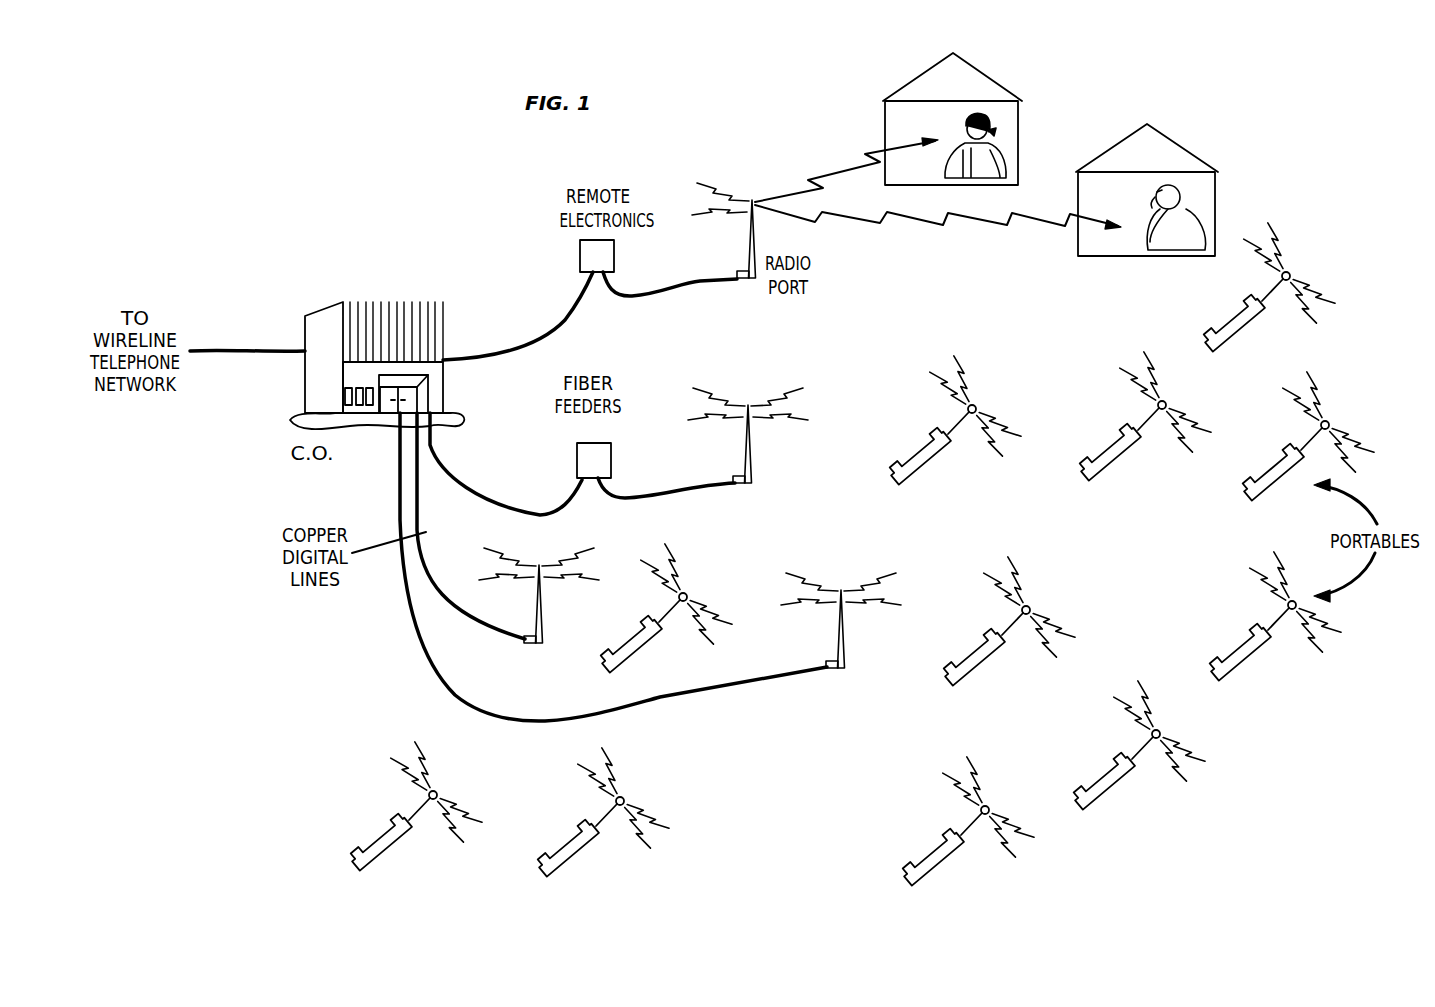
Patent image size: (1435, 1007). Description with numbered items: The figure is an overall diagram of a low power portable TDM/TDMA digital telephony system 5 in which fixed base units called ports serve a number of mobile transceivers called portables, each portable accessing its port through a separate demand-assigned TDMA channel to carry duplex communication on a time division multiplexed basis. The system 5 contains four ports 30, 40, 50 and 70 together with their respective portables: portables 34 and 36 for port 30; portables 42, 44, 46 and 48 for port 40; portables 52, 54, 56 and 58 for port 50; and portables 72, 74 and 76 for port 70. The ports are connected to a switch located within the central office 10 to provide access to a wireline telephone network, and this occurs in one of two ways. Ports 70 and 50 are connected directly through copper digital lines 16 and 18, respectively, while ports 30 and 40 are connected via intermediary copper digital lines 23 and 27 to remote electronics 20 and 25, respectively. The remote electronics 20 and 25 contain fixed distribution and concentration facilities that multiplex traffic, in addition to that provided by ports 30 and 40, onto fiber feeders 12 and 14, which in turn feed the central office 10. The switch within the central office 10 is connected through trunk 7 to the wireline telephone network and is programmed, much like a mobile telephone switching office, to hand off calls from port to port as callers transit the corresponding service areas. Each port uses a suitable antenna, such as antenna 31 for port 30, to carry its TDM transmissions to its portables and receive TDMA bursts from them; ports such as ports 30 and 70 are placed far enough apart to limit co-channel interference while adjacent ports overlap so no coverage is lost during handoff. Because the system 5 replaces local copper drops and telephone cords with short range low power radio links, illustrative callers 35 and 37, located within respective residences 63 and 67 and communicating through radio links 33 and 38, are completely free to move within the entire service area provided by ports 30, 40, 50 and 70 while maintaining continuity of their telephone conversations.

The low power portable TDM/TDMA digital telephony system 5 is at (232, 744).
The trunk 7 is at (235, 348).
The central office 10 is at (338, 311).
The fiber feeder 12 is at (555, 324).
The fiber feeder 14 is at (500, 503).
The copper digital line 16 is at (484, 626).
The copper digital line 18 is at (426, 668).
The remote electronics 20 is at (578, 253).
The intermediary copper digital line 23 is at (648, 298).
The remote electronics 25 is at (614, 461).
The intermediary copper digital line 27 is at (716, 488).
The port 30 is at (747, 282).
The antenna 31 is at (752, 196).
The radio link 33 is at (845, 167).
The portable 34 is at (1000, 130).
The caller 35 is at (1004, 161).
The portable 36 is at (1158, 193).
The caller 37 is at (1195, 217).
The radio link 38 is at (906, 222).
The port 40 is at (757, 481).
The portable 42 is at (935, 458).
The portable 44 is at (1130, 440).
The portable 46 is at (1276, 464).
The portable 48 is at (1228, 322).
The port 50 is at (841, 672).
The portable 52 is at (940, 845).
The portable 54 is at (995, 655).
The portable 56 is at (1123, 780).
The portable 58 is at (1247, 646).
The residence 63 is at (988, 78).
The residence 67 is at (1180, 145).
The port 70 is at (540, 648).
The portable 72 is at (390, 834).
The portable 74 is at (648, 650).
The portable 76 is at (566, 845).